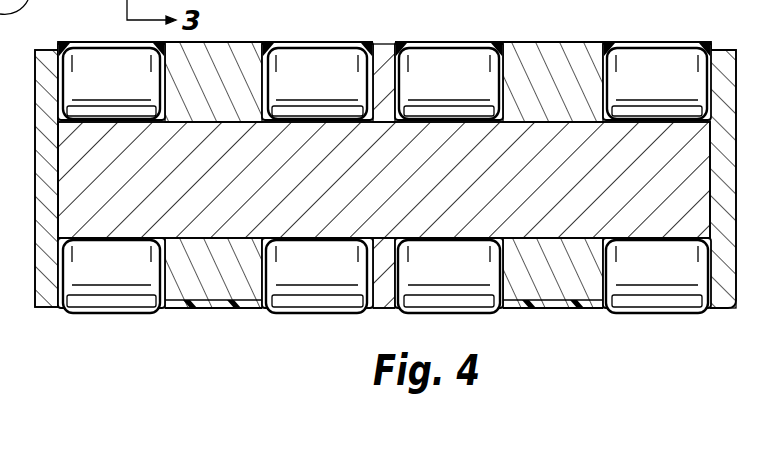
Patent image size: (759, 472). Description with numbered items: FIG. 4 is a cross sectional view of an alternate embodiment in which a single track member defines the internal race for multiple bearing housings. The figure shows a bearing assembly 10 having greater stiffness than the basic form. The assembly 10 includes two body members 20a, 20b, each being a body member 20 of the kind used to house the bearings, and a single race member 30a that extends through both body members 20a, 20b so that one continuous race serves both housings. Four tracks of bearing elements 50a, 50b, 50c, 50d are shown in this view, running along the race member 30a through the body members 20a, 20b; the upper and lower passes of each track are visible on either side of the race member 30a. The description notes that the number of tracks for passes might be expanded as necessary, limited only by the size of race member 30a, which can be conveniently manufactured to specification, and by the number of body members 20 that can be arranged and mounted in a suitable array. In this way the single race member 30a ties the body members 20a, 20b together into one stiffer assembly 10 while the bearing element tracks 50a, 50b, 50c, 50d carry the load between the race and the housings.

The bearing assembly 10 is at (264, 326).
The body member 20 is at (405, 154).
The body member 20a is at (192, 90).
The body member 20b is at (533, 90).
The race member 30a is at (341, 194).
The track of bearing elements 50a is at (90, 90).
The track of bearing elements 50b is at (296, 90).
The track of bearing elements 50c is at (431, 90).
The track of bearing elements 50d is at (643, 90).